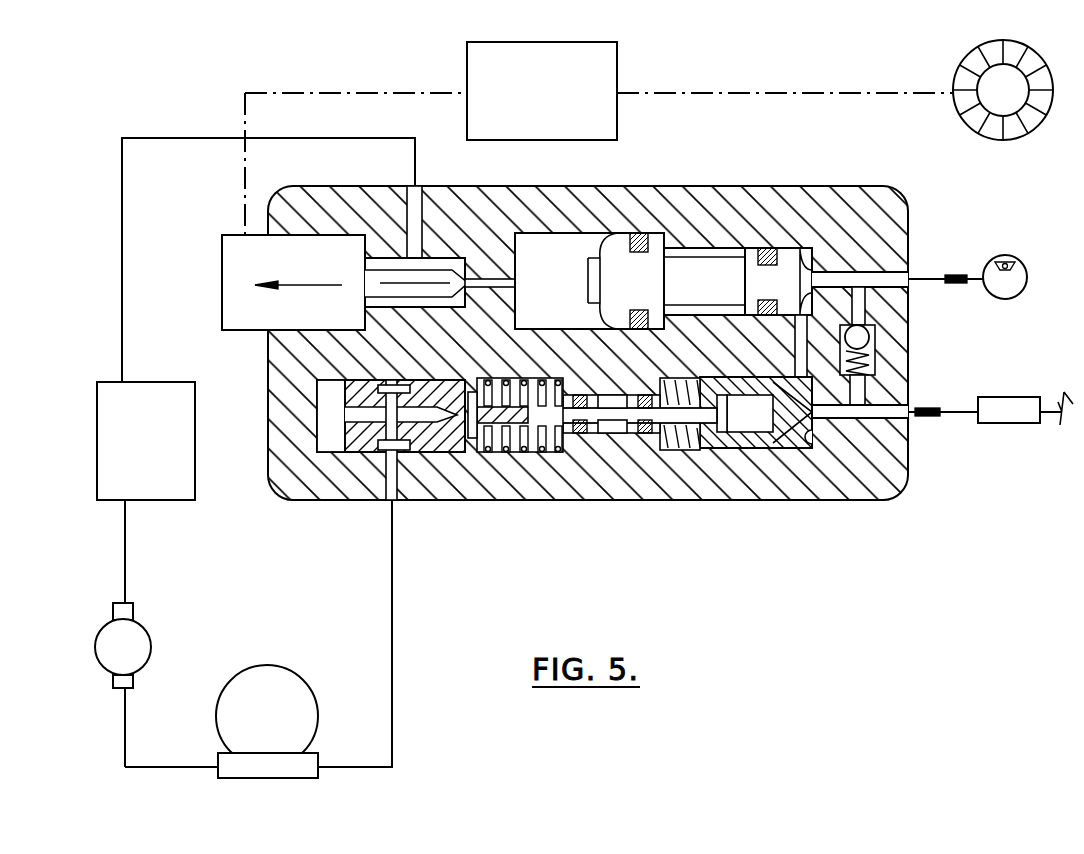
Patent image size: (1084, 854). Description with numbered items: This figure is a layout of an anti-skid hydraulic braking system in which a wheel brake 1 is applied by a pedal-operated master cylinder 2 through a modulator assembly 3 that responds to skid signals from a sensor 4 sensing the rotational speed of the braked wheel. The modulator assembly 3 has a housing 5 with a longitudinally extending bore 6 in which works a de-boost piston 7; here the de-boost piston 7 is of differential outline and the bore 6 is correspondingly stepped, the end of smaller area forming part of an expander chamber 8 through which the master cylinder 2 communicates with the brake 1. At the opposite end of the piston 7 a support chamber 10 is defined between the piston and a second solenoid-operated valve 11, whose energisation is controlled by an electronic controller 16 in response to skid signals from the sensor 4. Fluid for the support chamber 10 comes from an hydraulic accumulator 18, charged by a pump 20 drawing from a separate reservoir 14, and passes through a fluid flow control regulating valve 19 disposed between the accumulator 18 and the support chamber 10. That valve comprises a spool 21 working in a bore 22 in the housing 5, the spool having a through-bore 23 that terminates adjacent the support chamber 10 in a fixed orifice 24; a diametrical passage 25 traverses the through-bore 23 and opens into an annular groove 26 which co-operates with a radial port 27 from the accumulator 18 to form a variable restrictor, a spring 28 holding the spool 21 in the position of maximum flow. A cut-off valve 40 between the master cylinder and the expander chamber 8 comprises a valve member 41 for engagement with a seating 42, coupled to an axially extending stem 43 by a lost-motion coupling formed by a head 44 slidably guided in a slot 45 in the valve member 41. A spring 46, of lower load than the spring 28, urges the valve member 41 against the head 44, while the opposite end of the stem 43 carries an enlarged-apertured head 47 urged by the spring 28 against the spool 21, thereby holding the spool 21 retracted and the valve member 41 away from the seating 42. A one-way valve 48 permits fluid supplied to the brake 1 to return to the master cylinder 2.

The wheel brake 1 is at (1011, 284).
The master cylinder 2 is at (1005, 410).
The modulator assembly 3 is at (731, 196).
The sensor 4 is at (980, 112).
The housing 5 is at (825, 213).
The bore 6 is at (573, 232).
The de-boost piston 7 is at (693, 273).
The expander chamber 8 is at (812, 252).
The support chamber 10 is at (547, 253).
The second solenoid-operated valve 11 is at (260, 265).
The reservoir 14 is at (135, 403).
The electronic controller 16 is at (600, 78).
The hydraulic accumulator 18 is at (297, 723).
The fluid flow control regulating valve 19 is at (470, 453).
The pump 20 is at (138, 655).
The spool 21 is at (363, 437).
The bore 22 is at (332, 452).
The through-bore 23 is at (343, 452).
The fixed orifice 24 is at (470, 392).
The diametrical passage 25 is at (394, 386).
The annular groove 26 is at (400, 462).
The radial port 27 is at (394, 455).
The spring 28 is at (540, 453).
The cut-off valve 40 is at (720, 448).
The valve member 41 is at (767, 450).
The seating 42 is at (815, 447).
The stem 43 is at (628, 450).
The head 44 is at (745, 448).
The slot 45 is at (760, 450).
The spring 46 is at (700, 450).
The enlarged-apertured head 47 is at (500, 452).
The one-way valve 48 is at (870, 337).